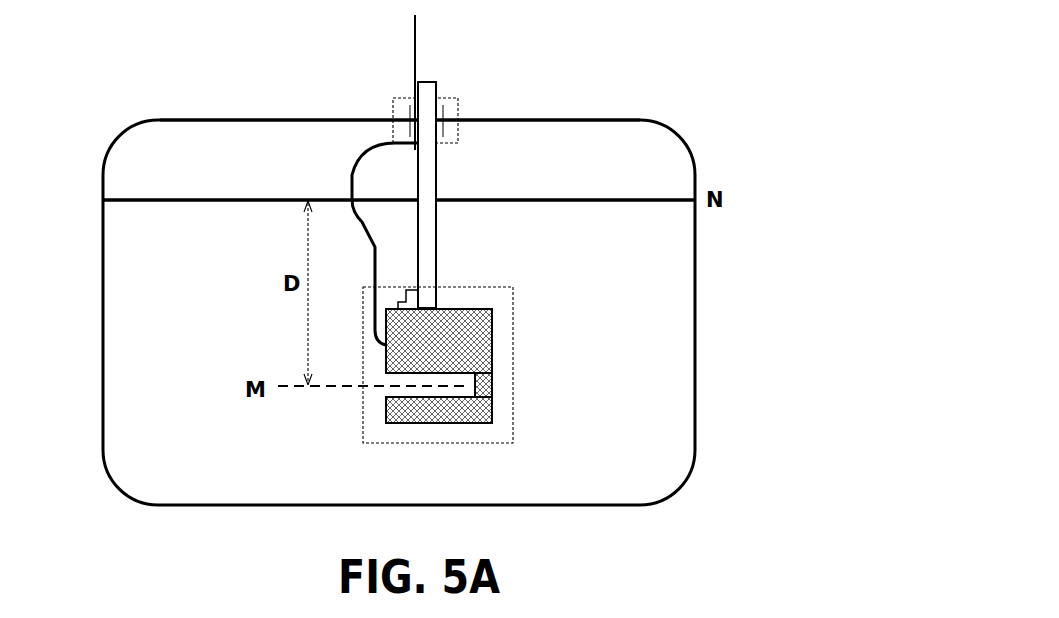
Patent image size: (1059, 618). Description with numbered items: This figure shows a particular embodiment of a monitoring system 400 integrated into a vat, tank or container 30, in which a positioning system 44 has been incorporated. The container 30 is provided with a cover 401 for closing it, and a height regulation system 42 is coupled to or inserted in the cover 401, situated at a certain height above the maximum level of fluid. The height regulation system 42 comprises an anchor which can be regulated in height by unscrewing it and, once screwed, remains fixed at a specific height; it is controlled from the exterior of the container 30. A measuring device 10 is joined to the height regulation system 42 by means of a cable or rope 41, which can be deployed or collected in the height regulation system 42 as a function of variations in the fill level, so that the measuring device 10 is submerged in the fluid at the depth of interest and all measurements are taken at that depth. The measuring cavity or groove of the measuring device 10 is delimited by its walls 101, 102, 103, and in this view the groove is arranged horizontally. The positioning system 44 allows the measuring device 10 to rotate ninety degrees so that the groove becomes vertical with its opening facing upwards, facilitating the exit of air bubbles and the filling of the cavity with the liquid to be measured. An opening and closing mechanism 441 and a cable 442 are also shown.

The monitoring system 400 is at (565, 108).
The cover 401 is at (228, 120).
The container 30 is at (103, 323).
The height regulation system 42 is at (395, 107).
The cable or rope 41 is at (437, 232).
The positioning system 44 is at (403, 298).
The cable 442 is at (416, 53).
The opening and closing mechanism 441 is at (406, 300).
The measuring device 10 is at (513, 377).
The wall 102 is at (492, 345).
The wall 103 is at (492, 388).
The wall 101 is at (492, 420).